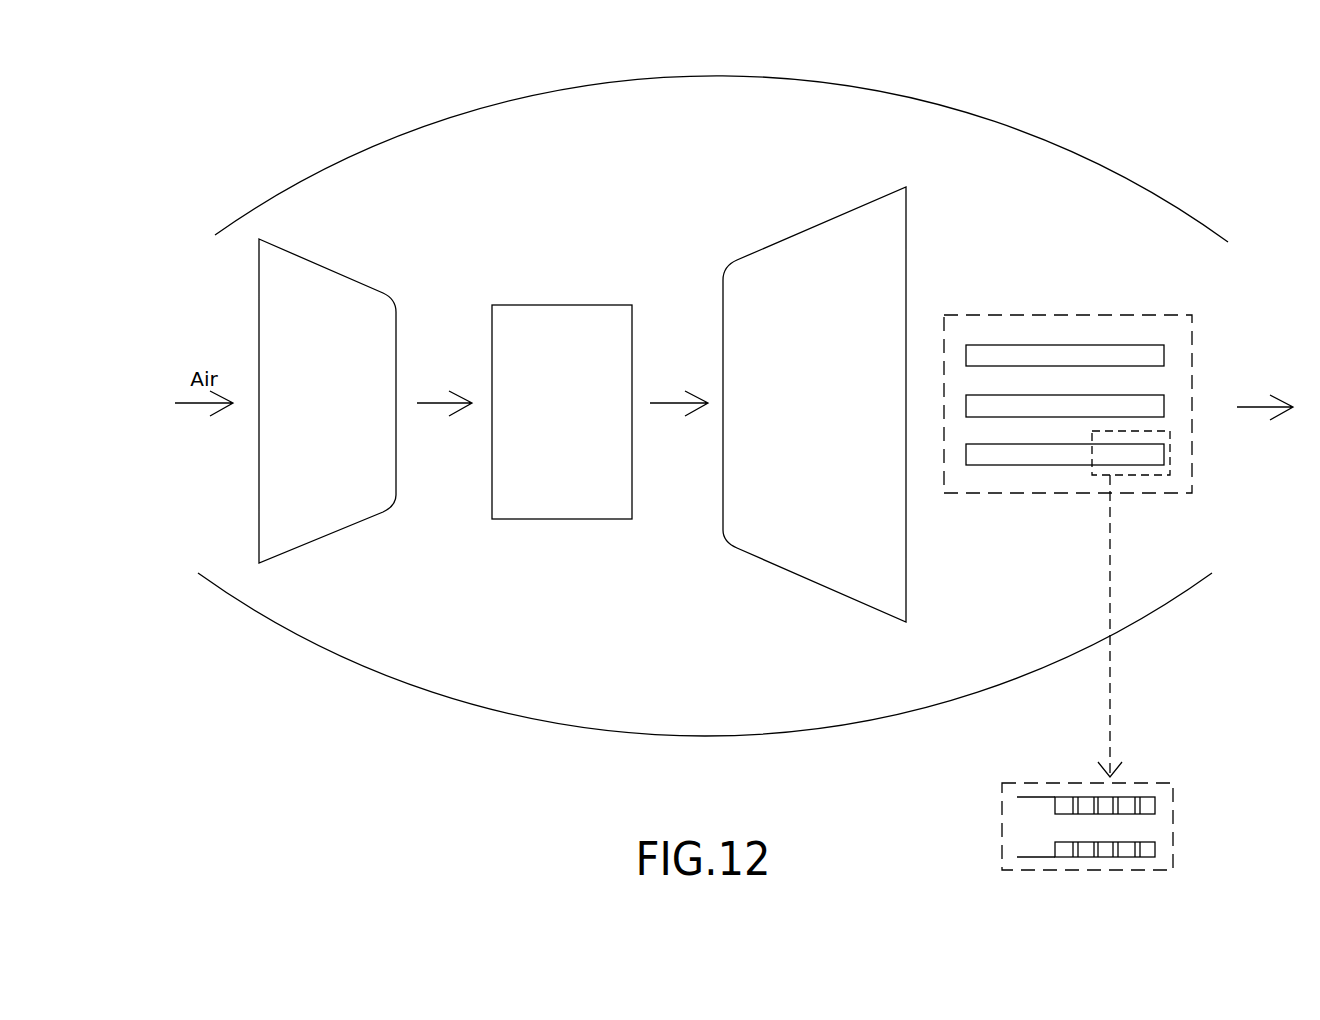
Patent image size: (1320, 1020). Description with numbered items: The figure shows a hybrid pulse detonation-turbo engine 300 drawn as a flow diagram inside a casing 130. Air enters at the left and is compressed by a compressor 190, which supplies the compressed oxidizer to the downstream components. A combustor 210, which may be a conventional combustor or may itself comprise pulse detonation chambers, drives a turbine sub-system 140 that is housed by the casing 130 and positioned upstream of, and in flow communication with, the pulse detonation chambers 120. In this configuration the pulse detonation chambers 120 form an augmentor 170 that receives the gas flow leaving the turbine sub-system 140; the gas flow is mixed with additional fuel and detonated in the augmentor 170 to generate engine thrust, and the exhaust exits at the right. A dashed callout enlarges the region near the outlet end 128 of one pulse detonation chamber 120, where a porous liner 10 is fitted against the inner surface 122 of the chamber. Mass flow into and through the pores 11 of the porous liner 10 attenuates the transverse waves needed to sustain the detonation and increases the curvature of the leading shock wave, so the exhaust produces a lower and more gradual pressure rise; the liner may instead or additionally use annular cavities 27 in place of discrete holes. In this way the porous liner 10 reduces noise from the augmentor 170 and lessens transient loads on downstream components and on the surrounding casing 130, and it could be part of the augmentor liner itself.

The engine 300 is at (724, 406).
The compressor 190 is at (300, 294).
The combustor 210 is at (545, 480).
The turbine sub-system 140 is at (822, 558).
The pulse detonation chamber 120 is at (1132, 362).
The augmentor 170 is at (1143, 492).
The outlet end 128 is at (1164, 455).
The casing 130 is at (1173, 600).
The inner surface 122 is at (1084, 838).
The porous liner 10 is at (1145, 805).
The pores 11 is at (1146, 867).
The annular cavities 27 is at (1133, 857).